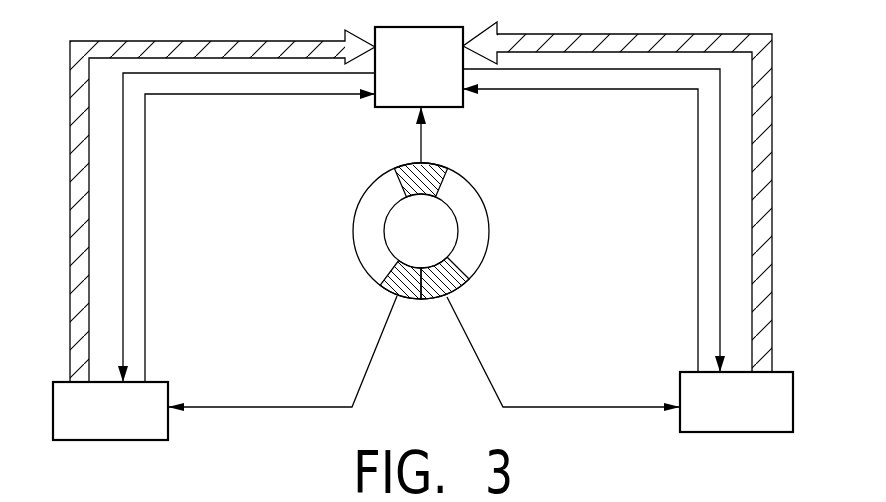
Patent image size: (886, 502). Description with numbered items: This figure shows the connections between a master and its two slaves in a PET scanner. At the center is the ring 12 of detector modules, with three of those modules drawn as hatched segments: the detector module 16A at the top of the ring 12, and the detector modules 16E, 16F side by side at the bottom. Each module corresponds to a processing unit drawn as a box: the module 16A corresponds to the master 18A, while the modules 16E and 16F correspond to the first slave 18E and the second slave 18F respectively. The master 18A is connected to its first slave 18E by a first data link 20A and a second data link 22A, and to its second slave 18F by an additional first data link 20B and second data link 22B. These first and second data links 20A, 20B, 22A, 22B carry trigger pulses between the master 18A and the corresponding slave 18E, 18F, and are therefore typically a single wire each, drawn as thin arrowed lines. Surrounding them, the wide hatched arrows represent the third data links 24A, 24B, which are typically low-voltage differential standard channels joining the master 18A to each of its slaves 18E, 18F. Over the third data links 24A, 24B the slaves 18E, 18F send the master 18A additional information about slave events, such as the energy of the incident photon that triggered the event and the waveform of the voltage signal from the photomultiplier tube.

The ring 12 is at (500, 184).
The detector module 16A is at (424, 163).
The detector module 16E is at (450, 292).
The detector module 16F is at (388, 292).
The master 18A is at (437, 78).
The first slave 18E is at (747, 409).
The second slave 18F is at (127, 418).
The first data link 20A is at (698, 202).
The first data link 20B is at (144, 195).
The second data link 22A is at (718, 127).
The second data link 22B is at (122, 135).
The third data link 24A is at (772, 133).
The third data link 24B is at (70, 160).